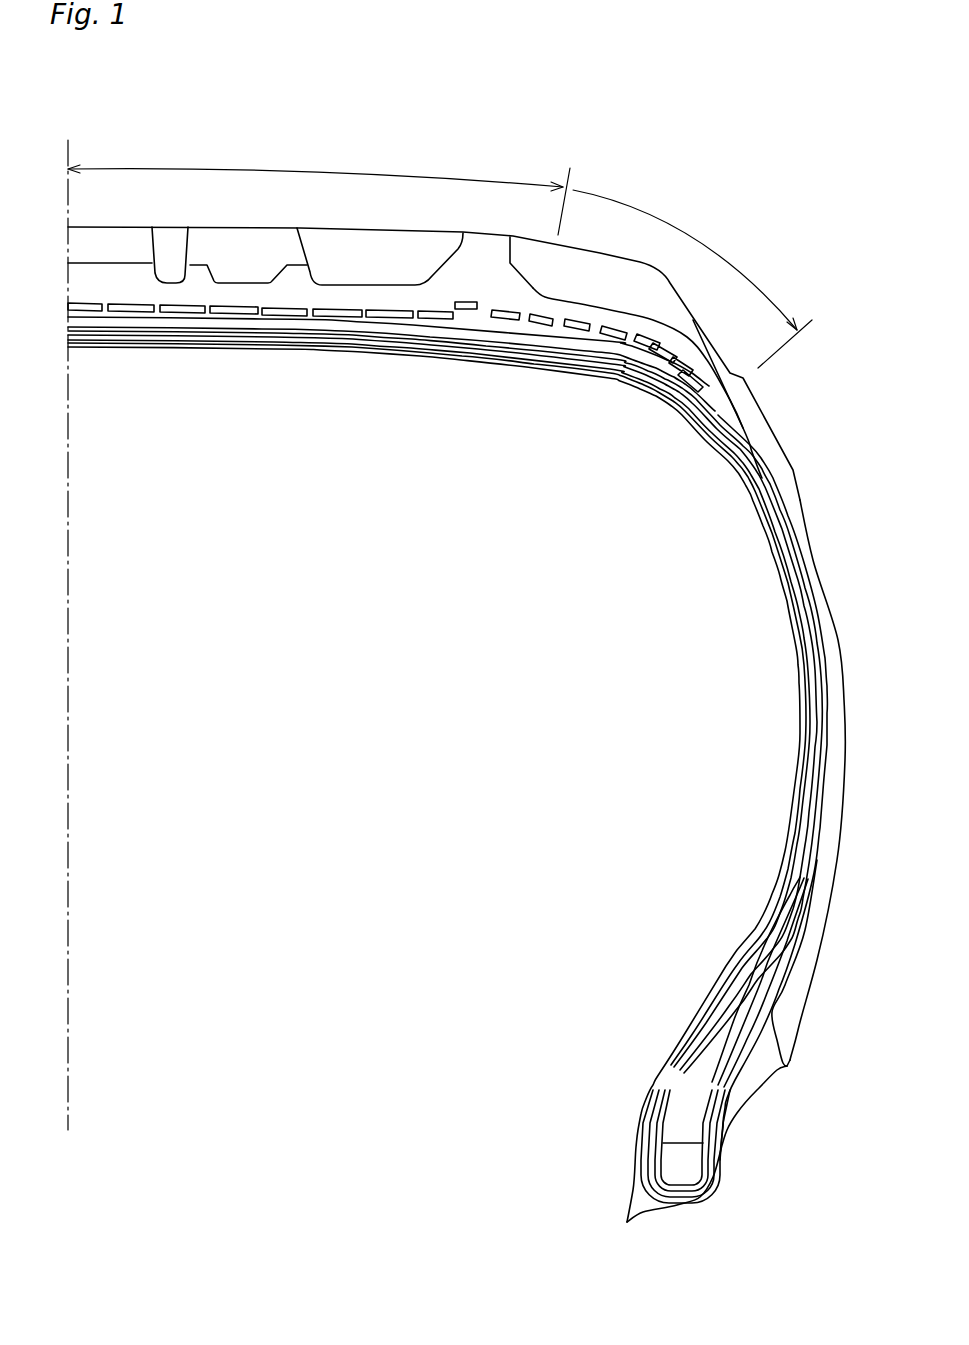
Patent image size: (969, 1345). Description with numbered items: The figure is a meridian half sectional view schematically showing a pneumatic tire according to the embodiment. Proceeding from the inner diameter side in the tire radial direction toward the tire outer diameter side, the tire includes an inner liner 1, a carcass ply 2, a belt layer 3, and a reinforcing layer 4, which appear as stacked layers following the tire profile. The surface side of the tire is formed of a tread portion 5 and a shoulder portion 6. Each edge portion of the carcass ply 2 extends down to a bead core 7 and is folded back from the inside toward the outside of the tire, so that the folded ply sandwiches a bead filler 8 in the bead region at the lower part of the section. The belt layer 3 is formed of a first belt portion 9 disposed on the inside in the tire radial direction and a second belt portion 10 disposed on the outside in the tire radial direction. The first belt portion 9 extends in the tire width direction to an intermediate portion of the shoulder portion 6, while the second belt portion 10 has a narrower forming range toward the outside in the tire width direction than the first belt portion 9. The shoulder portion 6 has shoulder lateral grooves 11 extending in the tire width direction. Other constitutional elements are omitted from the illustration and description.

The inner liner 1 is at (158, 346).
The carcass ply 2 is at (243, 339).
The belt layer 3 is at (445, 688).
The reinforcing layer 4 is at (530, 323).
The tread portion 5 is at (319, 185).
The shoulder portion 6 is at (692, 279).
The bead core 7 is at (677, 1165).
The bead filler 8 is at (730, 1093).
The first belt portion 9 is at (322, 329).
The second belt portion 10 is at (393, 319).
The shoulder lateral grooves 11 is at (612, 277).